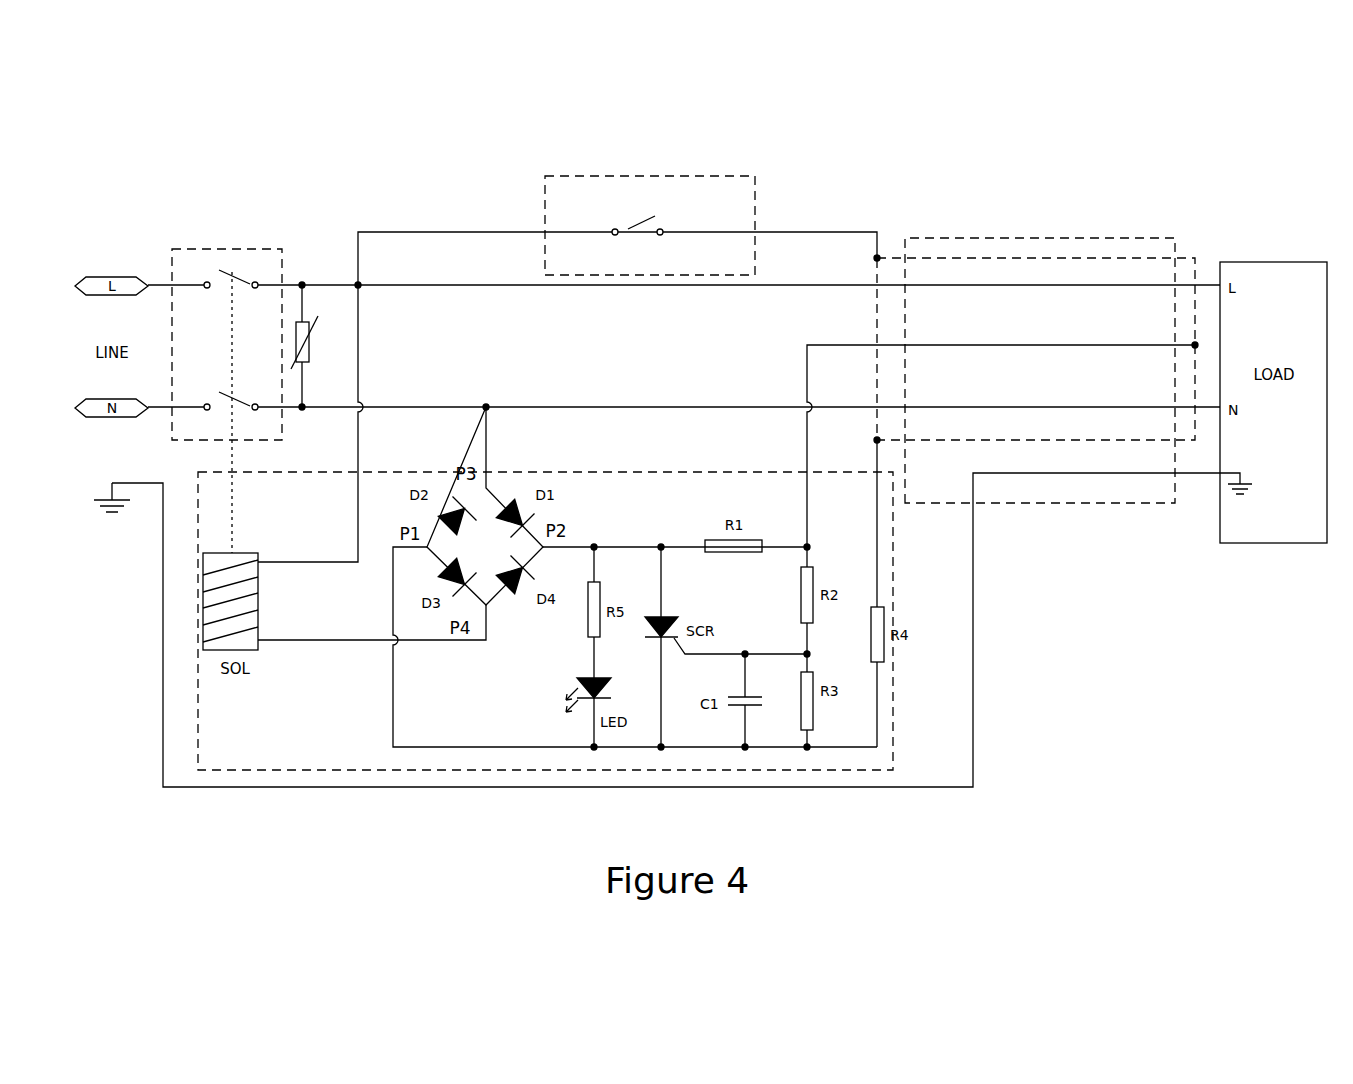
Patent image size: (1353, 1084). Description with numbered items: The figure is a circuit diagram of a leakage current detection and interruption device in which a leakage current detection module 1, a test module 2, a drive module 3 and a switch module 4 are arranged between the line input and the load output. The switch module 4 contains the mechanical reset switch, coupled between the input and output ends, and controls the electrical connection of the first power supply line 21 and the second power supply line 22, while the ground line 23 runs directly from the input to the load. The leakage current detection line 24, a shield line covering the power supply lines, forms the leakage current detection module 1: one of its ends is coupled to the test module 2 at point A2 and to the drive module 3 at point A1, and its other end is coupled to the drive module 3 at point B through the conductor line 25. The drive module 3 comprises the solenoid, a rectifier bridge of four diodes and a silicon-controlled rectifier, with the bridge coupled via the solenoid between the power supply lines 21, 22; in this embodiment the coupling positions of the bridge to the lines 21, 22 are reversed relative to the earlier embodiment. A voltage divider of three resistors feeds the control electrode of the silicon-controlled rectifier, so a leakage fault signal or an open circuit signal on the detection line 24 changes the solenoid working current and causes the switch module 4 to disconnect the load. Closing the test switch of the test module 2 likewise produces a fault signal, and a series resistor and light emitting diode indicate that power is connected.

The leakage current detection module 1 is at (1070, 503).
The test module 2 is at (755, 176).
The drive module 3 is at (893, 712).
The switch module 4 is at (272, 246).
The first power supply line 21 is at (773, 285).
The second power supply line 22 is at (761, 405).
The ground line 23 is at (975, 590).
The leakage current detection line 24 is at (990, 258).
The conductor line 25 is at (990, 345).
The point A1 is at (877, 440).
The point A2 is at (877, 258).
The point B is at (1195, 345).